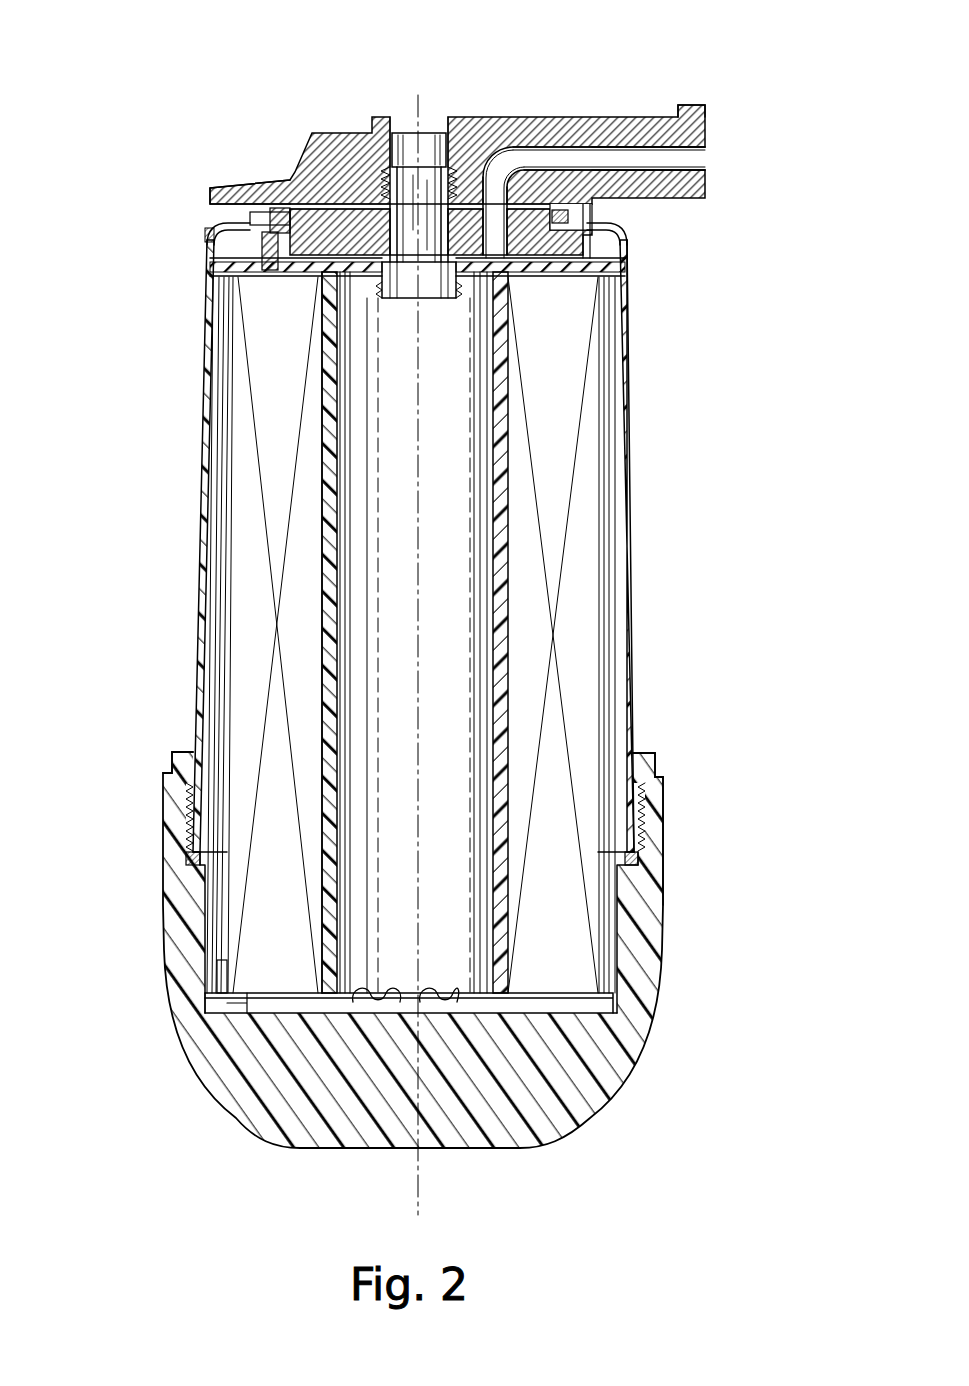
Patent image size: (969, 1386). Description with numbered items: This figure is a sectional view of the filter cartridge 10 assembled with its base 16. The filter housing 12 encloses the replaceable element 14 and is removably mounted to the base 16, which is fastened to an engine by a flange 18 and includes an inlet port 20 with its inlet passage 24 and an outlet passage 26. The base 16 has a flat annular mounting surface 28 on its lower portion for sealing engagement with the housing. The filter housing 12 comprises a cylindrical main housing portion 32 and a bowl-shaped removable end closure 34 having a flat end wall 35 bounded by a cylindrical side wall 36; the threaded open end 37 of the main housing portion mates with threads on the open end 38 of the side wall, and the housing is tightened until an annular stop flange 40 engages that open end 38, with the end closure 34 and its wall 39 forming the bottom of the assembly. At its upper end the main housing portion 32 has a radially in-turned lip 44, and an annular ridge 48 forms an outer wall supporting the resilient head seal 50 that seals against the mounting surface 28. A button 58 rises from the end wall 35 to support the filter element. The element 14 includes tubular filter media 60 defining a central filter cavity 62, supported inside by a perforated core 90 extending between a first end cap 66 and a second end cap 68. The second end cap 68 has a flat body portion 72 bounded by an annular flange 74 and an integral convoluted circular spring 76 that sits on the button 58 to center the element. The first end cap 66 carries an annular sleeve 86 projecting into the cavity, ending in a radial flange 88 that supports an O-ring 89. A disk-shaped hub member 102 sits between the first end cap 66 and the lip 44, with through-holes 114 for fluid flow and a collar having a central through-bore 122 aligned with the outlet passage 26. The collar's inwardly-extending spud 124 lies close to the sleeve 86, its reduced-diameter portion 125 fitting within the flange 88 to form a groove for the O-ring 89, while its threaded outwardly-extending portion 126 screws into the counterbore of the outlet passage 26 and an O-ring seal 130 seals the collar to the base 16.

The filter cartridge 10 is at (125, 76).
The filter housing 12 is at (633, 458).
The replaceable element 14 is at (228, 592).
The base 16 is at (531, 130).
The flange 18 is at (689, 104).
The inlet port 20 is at (697, 153).
The inlet passage 24 is at (612, 160).
The outlet passage 26 is at (413, 183).
The mounting surface 28 is at (212, 199).
The main housing portion 32 is at (632, 540).
The end closure 34 is at (633, 990).
The end wall 35 is at (572, 1097).
The side wall 36 is at (650, 865).
The open end 37 is at (633, 797).
The open end 38 is at (655, 803).
The nut outer wall 39 is at (667, 900).
The stop flange 40 is at (655, 758).
The in-turned lip 44 is at (228, 226).
The annular ridge 48 is at (590, 215).
The head seal 50 is at (583, 243).
The button 58 is at (417, 990).
The filter media 60 is at (248, 675).
The central filter cavity 62 is at (377, 470).
The first end cap 66 is at (262, 273).
The second end cap 68 is at (597, 1027).
The body portion 72 is at (252, 1013).
The annular flange 74 is at (218, 970).
The convoluted circular spring 76 is at (380, 990).
The annular sleeve 86 is at (625, 397).
The radial flange 88 is at (357, 285).
The O-ring 89 is at (470, 283).
The perforated core 90 is at (320, 767).
The hub member 102 is at (553, 255).
The through-holes 114 is at (503, 210).
The through-bore 122 is at (407, 143).
The spud 124 is at (430, 300).
The reduced-diameter portion 125 is at (380, 300).
The outwardly-extending portion 126 is at (382, 175).
The O-ring seal 130 is at (385, 186).